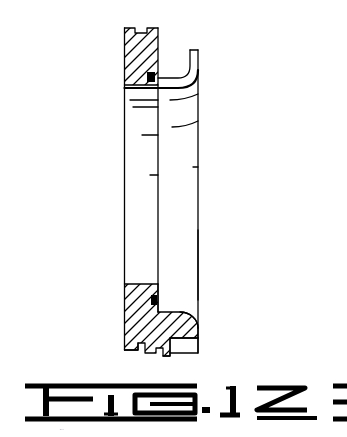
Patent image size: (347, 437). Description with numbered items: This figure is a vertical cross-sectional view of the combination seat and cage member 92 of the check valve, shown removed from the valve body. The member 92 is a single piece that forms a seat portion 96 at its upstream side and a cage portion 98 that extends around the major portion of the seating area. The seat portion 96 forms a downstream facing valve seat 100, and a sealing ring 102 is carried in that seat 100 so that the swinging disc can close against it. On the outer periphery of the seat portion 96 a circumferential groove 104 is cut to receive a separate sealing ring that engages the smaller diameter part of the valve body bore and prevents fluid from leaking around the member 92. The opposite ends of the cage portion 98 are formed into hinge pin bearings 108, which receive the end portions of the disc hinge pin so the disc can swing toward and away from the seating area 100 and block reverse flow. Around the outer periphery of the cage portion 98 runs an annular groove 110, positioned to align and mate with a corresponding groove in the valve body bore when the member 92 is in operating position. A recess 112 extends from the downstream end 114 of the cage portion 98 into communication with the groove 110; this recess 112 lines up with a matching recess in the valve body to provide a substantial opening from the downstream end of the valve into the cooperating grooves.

The combination seat and cage member 92 is at (120, 57).
The hinge pin bearings 108 is at (173, 77).
The seat portion 96 is at (125, 320).
The circumferential groove 104 is at (139, 351).
The valve seat 100 is at (158, 288).
The sealing ring 102 is at (165, 296).
The cage portion 98 is at (183, 318).
The downstream end 114 is at (192, 332).
The recess 112 is at (185, 347).
The annular groove 110 is at (176, 356).